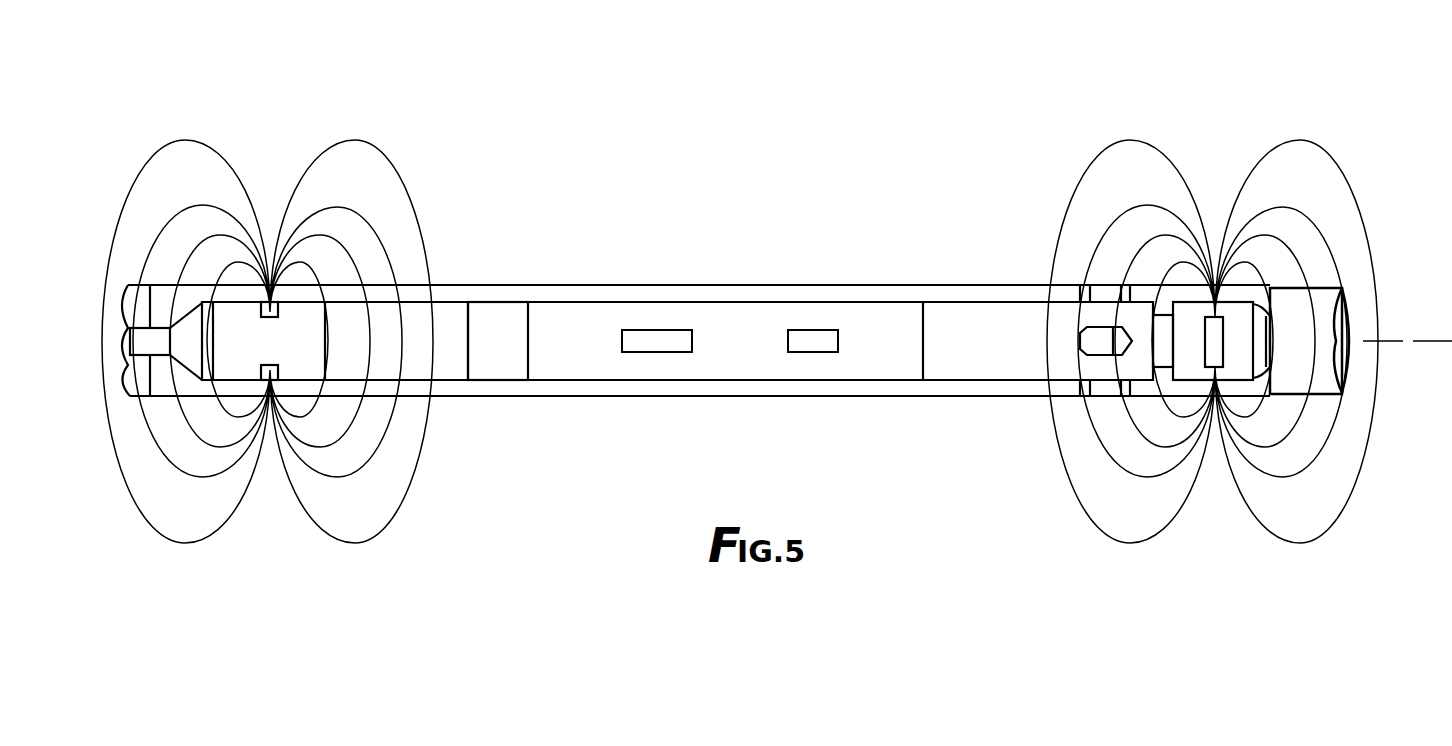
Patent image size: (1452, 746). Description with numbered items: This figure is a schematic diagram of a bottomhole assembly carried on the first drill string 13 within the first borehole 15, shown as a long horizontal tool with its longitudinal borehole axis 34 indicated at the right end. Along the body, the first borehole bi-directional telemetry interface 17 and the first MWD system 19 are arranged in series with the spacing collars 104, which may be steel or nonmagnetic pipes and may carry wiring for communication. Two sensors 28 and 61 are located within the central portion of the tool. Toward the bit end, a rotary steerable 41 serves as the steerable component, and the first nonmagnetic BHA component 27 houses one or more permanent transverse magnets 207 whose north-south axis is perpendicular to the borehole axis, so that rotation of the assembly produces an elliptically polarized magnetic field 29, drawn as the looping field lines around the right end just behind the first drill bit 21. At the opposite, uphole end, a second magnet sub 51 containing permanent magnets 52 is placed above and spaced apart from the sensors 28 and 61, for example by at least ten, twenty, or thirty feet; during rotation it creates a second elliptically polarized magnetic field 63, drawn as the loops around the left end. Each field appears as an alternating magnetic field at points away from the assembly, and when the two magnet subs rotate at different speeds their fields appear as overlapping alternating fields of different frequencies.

The first drill string 13 is at (150, 285).
The first borehole 15 is at (878, 285).
The first borehole bi-directional telemetry interface 17 is at (492, 318).
The first MWD system 19 is at (563, 317).
The first drill bit 21 is at (1313, 310).
The first nonmagnetic BHA component 27 is at (1183, 313).
The sensors 28 is at (672, 338).
The elliptically polarized magnetic field 29 is at (1248, 175).
The borehole axis 34 is at (1417, 342).
The rotary steerable 41 is at (950, 327).
The second magnet sub 51 is at (228, 315).
The permanent magnets 52 is at (277, 305).
The sensors 61 is at (802, 337).
The second elliptically polarized magnetic field 63 is at (298, 182).
The spacing collars 104 is at (420, 327).
The permanent transverse magnets 207 is at (1220, 332).